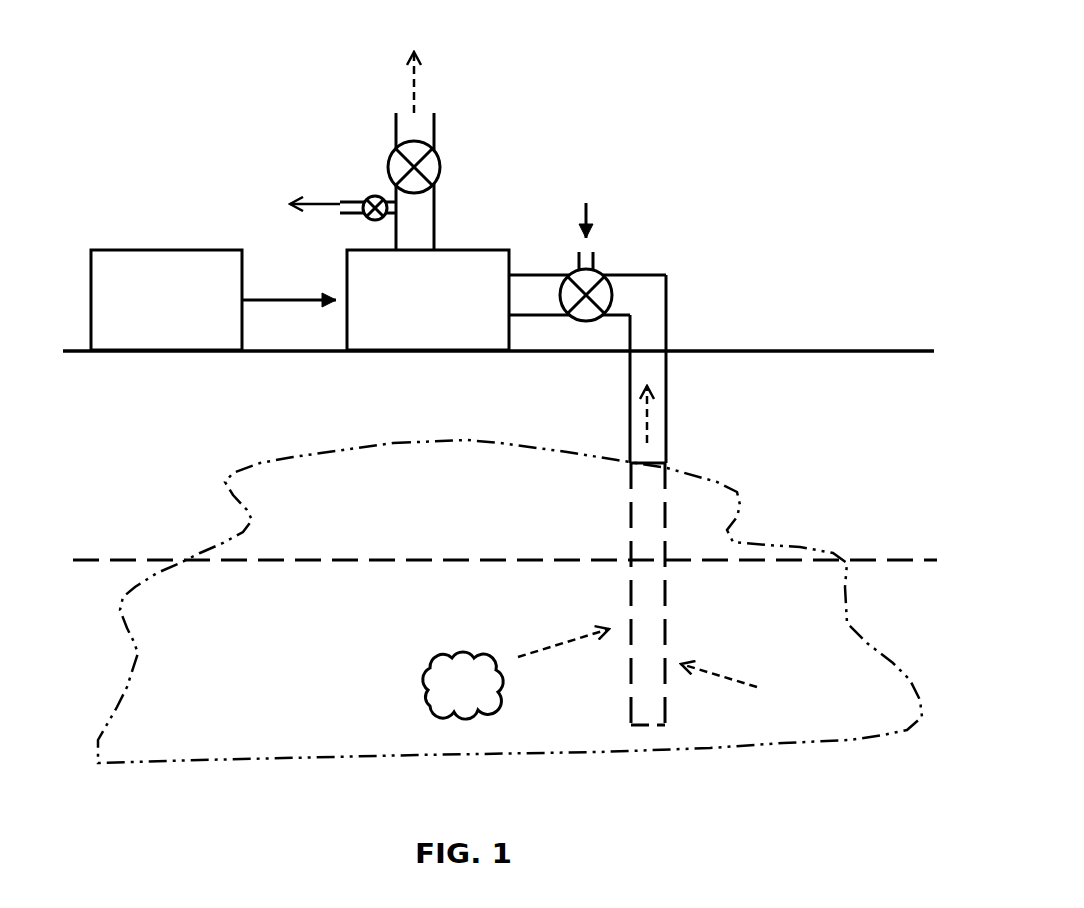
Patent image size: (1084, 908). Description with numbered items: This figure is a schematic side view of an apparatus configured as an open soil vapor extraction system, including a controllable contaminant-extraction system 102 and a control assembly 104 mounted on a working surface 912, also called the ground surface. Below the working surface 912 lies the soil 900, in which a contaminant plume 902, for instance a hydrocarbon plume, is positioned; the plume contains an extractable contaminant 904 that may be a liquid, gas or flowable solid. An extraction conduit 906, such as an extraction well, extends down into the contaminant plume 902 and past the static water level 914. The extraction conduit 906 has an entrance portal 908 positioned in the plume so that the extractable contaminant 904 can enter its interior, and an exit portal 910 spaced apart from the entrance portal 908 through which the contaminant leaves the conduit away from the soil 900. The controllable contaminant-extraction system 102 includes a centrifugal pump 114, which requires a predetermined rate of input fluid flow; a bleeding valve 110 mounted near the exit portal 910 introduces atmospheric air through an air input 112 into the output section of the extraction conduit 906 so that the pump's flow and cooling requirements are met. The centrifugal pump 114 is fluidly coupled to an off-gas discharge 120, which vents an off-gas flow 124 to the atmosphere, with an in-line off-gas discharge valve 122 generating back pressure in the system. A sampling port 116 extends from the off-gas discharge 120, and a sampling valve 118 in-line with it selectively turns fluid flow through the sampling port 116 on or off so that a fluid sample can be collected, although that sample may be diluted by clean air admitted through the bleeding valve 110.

The controllable contaminant-extraction system 102 is at (417, 322).
The control assembly 104 is at (184, 315).
The bleeding valve 110 is at (615, 295).
The air input 112 is at (593, 260).
The centrifugal pump 114 is at (440, 307).
The sampling port 116 is at (365, 205).
The sampling valve 118 is at (372, 197).
The off-gas discharge 120 is at (435, 130).
The off-gas discharge valve 122 is at (442, 165).
The off-gas flow 124 is at (415, 83).
The soil 900 is at (805, 412).
The contaminant plume 902 is at (743, 503).
The extractable contaminant 904 is at (480, 695).
The extraction conduit 906 is at (667, 320).
The entrance portal 908 is at (665, 620).
The exit portal 910 is at (542, 268).
The working surface 912 is at (877, 350).
The static water level 914 is at (107, 560).